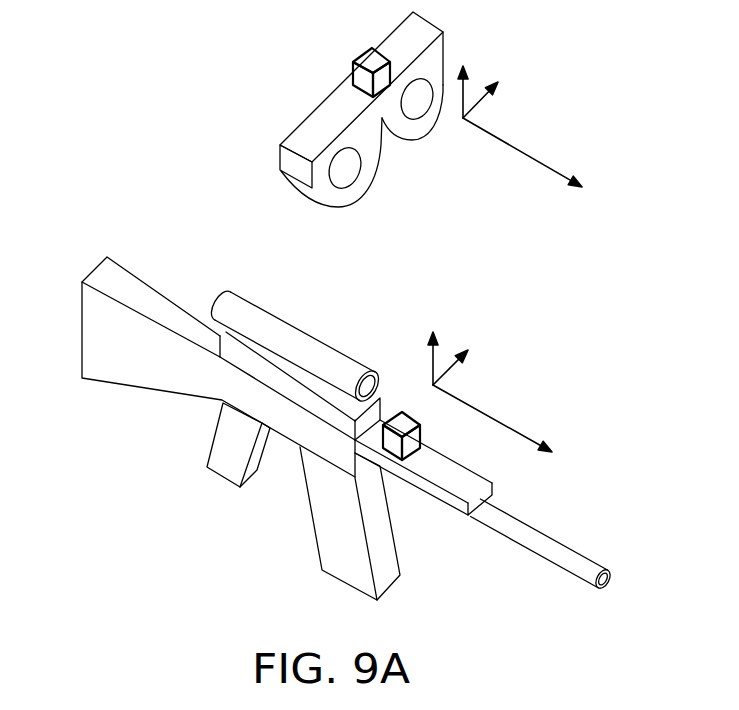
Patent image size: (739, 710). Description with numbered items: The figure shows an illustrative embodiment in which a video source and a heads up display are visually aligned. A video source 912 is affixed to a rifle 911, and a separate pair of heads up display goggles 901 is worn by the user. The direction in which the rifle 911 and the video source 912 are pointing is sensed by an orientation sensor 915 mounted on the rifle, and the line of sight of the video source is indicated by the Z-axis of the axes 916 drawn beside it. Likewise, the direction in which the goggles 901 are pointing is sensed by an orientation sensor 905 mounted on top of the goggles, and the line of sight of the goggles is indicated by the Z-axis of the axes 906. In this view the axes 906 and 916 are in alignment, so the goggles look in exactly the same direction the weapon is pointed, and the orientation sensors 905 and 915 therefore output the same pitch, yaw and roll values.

The heads up display goggles 901 is at (314, 112).
The orientation sensor 905 is at (353, 62).
The axes 906 is at (463, 120).
The rifle 911 is at (168, 300).
The video source 912 is at (302, 328).
The orientation sensor 915 is at (404, 461).
The axes 916 is at (432, 384).